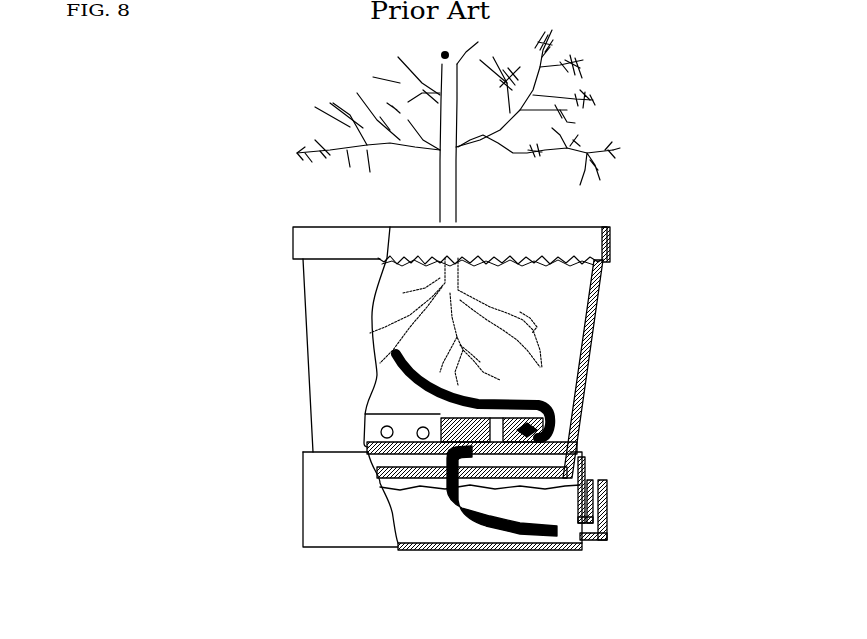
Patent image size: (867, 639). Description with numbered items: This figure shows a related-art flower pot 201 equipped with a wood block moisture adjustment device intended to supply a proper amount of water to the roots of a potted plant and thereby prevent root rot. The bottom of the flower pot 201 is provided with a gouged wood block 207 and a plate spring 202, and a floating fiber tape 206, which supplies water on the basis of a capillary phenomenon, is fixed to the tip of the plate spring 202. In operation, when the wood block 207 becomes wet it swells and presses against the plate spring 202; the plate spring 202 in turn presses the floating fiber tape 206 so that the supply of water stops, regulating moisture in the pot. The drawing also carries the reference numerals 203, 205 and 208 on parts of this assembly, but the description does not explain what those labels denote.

The flower pot 201 is at (587, 340).
The plate spring 202 is at (417, 428).
The drainage hole 203 is at (380, 428).
The root pruning block 205 is at (553, 402).
The floating fiber tape 206 is at (480, 527).
The gouged wood block 207 is at (560, 423).
The mounting bracket 208 is at (590, 480).